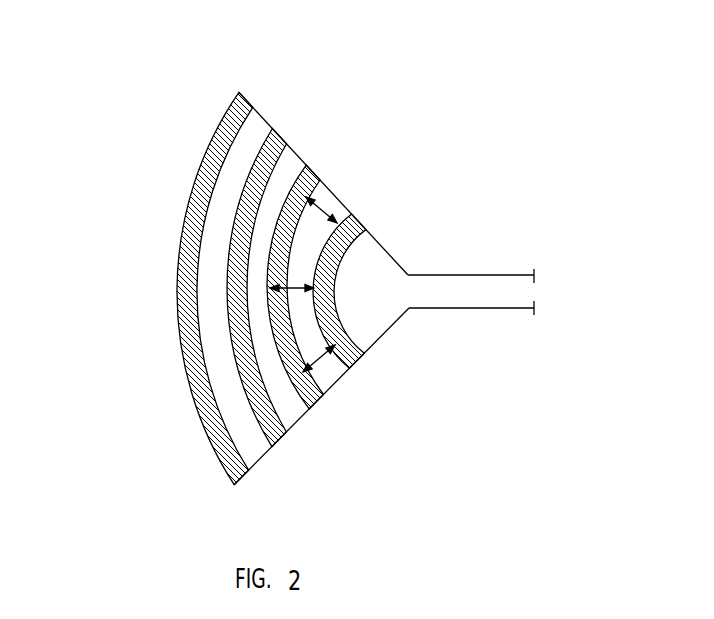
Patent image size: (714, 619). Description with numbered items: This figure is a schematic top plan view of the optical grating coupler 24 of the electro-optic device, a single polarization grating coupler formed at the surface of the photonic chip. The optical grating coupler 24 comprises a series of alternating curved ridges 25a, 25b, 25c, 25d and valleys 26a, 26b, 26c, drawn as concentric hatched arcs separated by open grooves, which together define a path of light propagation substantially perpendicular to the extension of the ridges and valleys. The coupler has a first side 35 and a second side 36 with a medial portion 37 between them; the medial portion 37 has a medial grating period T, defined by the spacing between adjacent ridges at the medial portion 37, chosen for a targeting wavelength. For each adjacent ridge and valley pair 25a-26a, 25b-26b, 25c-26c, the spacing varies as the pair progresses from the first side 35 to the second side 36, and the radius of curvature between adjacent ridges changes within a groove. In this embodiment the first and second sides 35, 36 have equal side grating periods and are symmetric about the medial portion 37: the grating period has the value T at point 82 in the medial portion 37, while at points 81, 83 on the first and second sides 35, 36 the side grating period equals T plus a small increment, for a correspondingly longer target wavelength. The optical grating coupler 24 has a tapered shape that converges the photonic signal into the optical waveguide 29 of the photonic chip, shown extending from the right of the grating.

The optical grating coupler 24 is at (305, 140).
The curved ridge 25a is at (245, 97).
The curved ridge 25b is at (290, 423).
The curved ridge 25c is at (320, 385).
The curved ridge 25d is at (358, 342).
The valley 26a is at (258, 133).
The valley 26b is at (297, 168).
The valley 26c is at (320, 365).
The optical waveguide 29 is at (496, 287).
The first side 35 is at (323, 200).
The second side 36 is at (280, 437).
The medial portion 37 is at (217, 305).
The point 81 is at (327, 214).
The point 82 is at (289, 283).
The point 83 is at (335, 370).